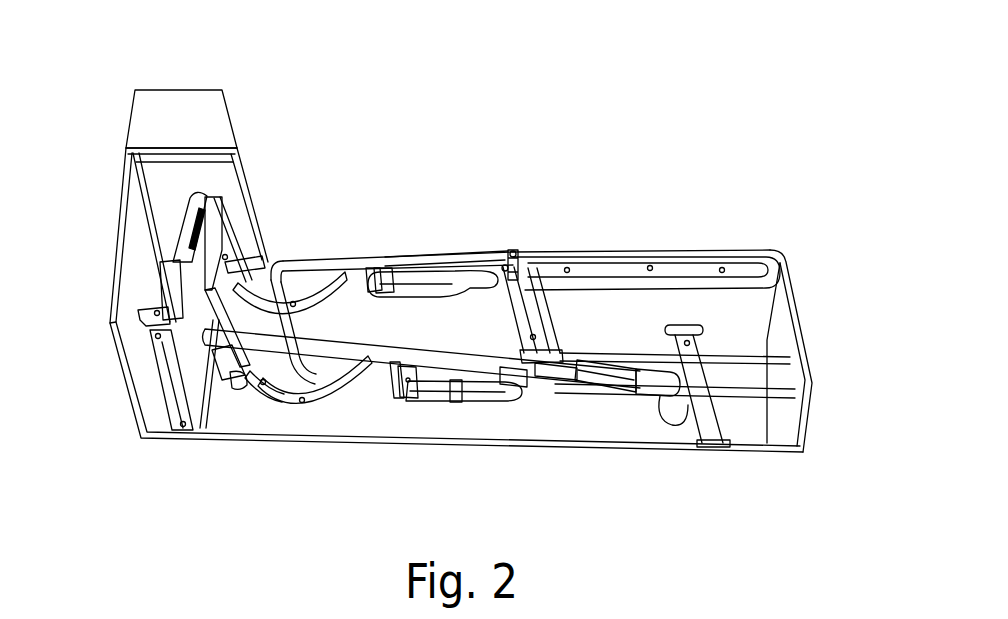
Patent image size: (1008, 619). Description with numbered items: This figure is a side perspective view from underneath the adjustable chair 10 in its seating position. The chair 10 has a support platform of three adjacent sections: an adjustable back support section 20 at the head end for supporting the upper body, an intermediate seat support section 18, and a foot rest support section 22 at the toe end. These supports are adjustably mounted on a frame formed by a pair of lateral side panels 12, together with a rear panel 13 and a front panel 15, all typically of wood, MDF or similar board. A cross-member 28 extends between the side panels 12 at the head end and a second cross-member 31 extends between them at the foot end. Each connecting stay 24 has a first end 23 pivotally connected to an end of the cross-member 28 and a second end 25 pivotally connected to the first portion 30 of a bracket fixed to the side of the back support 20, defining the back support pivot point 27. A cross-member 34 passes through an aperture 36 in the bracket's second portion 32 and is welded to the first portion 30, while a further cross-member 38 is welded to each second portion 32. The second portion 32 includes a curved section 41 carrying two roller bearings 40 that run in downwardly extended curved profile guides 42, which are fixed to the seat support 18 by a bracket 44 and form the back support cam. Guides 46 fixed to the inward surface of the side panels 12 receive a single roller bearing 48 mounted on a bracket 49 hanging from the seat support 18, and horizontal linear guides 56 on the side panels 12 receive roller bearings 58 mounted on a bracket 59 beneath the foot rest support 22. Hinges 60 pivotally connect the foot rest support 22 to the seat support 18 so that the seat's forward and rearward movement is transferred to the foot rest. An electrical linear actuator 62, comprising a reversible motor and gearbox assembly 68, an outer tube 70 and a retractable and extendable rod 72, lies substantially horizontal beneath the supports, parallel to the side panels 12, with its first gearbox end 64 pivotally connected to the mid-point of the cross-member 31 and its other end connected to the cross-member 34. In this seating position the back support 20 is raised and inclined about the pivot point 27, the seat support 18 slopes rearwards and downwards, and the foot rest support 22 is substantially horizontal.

The chair 10 is at (119, 436).
The lateral side panels 12 is at (560, 392).
The rear panel 13 is at (128, 170).
The front panel 15 is at (790, 340).
The seat support section 18 is at (410, 266).
The back support section 20 is at (190, 116).
The foot rest support section 22 is at (520, 258).
The first end 23 is at (150, 322).
The connecting stays 24 is at (180, 262).
The second end 25 is at (175, 196).
The back support pivot point 27 is at (205, 200).
The cross-member 28 is at (168, 400).
The first portion 30 is at (222, 205).
The second cross-member 31 is at (742, 396).
The second portion 32 is at (225, 245).
The cross-member 34 is at (250, 378).
The aperture 36 is at (222, 372).
The further cross-member 38 is at (268, 396).
The roller bearings 40 is at (310, 392).
The curved section 41 is at (318, 372).
The curved profile guides 42 is at (400, 398).
The bracket 44 is at (302, 282).
The guides 46 is at (452, 262).
The roller bearing 48 is at (368, 272).
The bracket 49 is at (384, 264).
The horizontal linear guides 56 is at (712, 272).
The roller bearings 58 is at (606, 378).
The bracket 59 is at (545, 262).
The hinges 60 is at (512, 255).
The electrical linear actuator 62 is at (662, 402).
The first gearbox end 64 is at (706, 412).
The reversible motor and gearbox assembly 68 is at (668, 410).
The outer tube 70 is at (520, 392).
The retractable and extendable rod 72 is at (345, 382).